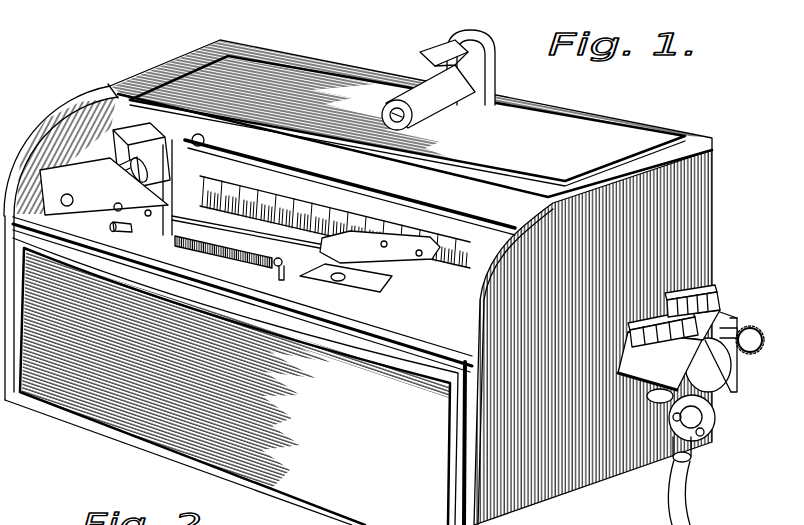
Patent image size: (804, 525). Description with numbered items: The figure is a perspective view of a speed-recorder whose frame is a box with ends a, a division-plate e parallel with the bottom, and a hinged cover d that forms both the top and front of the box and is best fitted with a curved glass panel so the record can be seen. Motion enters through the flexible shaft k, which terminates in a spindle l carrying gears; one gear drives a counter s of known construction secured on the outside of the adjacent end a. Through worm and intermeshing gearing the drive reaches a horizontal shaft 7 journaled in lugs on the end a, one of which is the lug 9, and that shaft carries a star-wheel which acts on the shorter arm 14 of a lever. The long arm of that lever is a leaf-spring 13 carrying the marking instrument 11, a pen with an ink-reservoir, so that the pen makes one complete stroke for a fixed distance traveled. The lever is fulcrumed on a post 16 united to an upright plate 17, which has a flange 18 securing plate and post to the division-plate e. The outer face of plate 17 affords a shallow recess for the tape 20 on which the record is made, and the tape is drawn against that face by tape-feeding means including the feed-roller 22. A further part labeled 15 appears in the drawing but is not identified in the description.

The end a is at (77, 113).
The post 16 is at (118, 100).
The cover d is at (345, 290).
The shorter arm 14 is at (122, 179).
The lug 9 is at (61, 197).
The horizontal shaft 7 is at (114, 209).
The division-plate e is at (124, 221).
The feed-roller 22 is at (206, 141).
The upright plate 17 is at (212, 238).
The tape 20 is at (359, 212).
The leaf-spring 13 is at (214, 226).
The marking instrument 11 is at (432, 248).
The rack 15 is at (256, 259).
The flange 18 is at (346, 282).
The counter s is at (691, 338).
The spindle l is at (703, 468).
The flexible shaft k is at (713, 506).